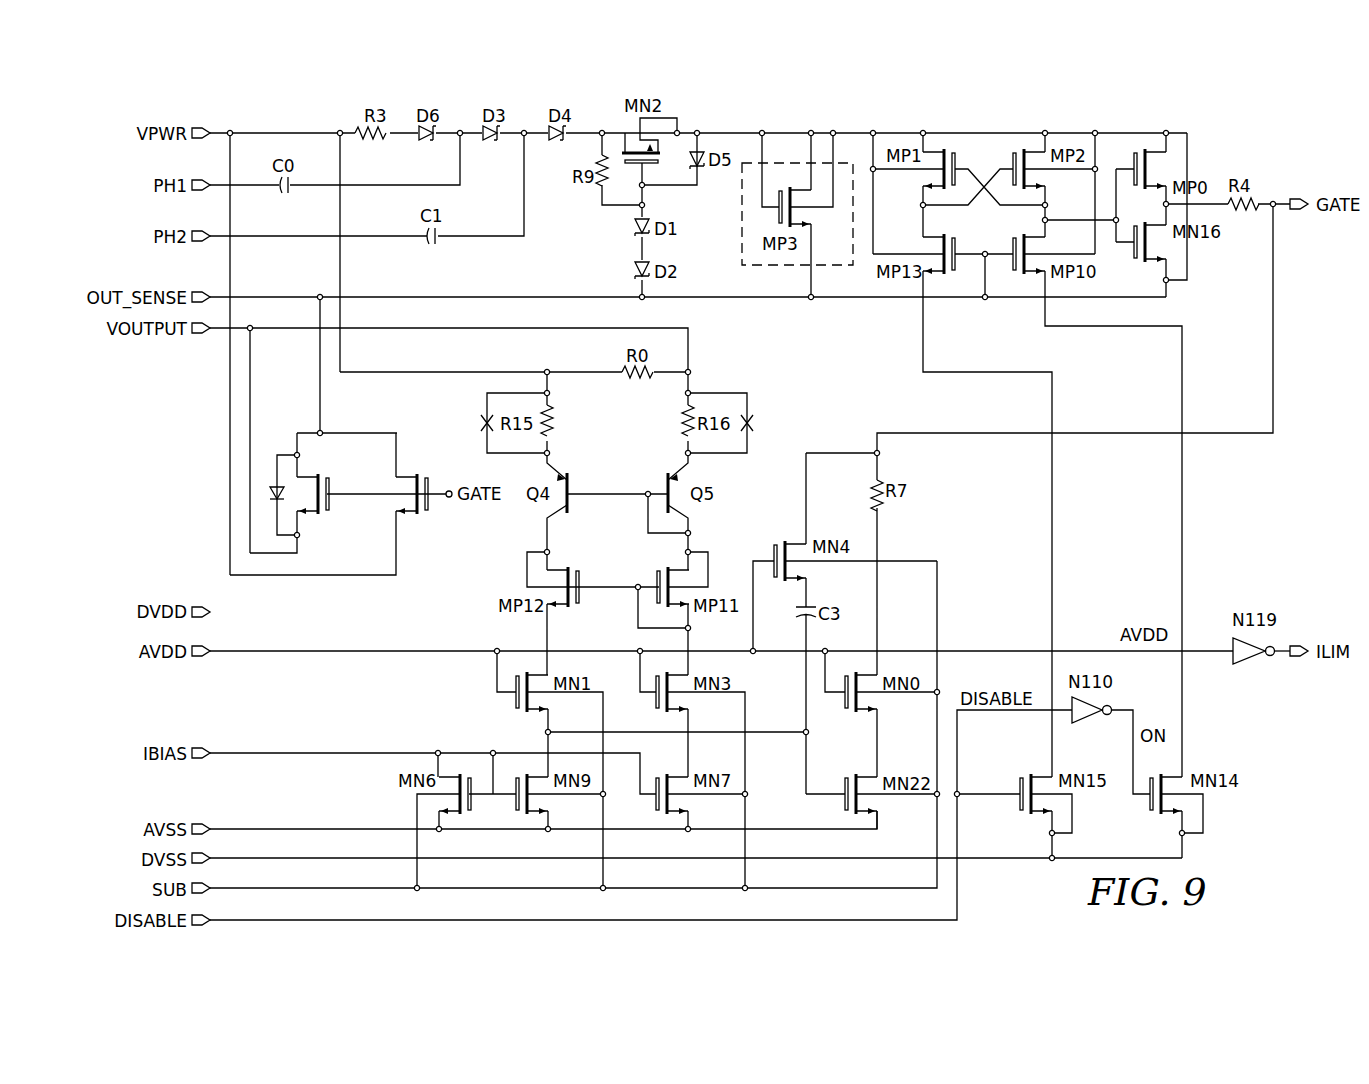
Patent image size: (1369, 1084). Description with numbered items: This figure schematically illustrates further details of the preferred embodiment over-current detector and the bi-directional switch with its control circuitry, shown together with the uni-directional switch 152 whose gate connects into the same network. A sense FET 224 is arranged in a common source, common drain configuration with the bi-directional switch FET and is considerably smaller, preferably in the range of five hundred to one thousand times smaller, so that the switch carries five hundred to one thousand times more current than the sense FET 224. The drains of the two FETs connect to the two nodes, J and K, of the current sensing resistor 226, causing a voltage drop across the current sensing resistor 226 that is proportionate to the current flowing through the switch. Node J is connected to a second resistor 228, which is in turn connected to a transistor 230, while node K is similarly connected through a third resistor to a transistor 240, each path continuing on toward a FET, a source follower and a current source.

The uni-directional switch 152 is at (426, 506).
The sense FET 224 is at (327, 506).
The current sensing resistor 226 is at (640, 378).
The second resistor 228 is at (552, 425).
The transistor 230 is at (569, 510).
The transistor 240 is at (666, 479).